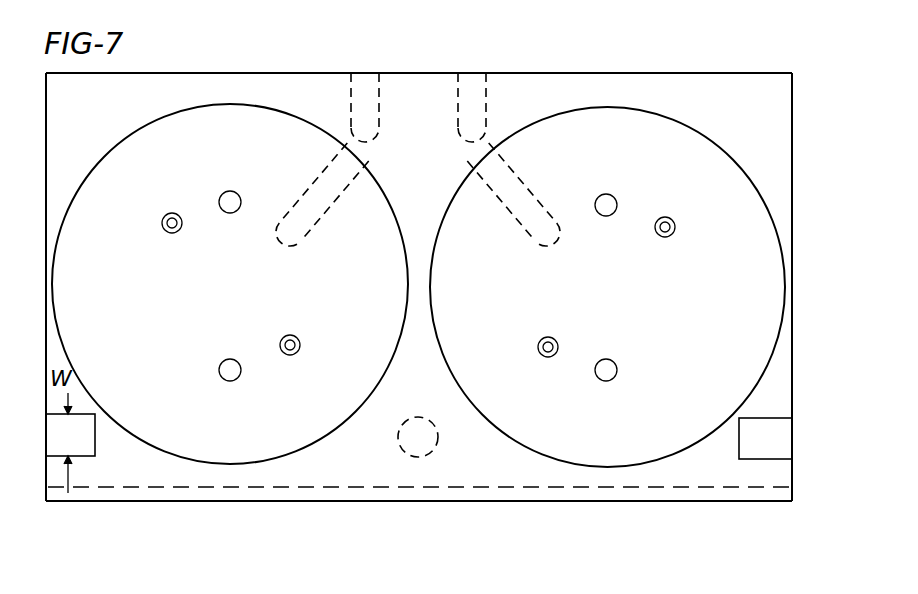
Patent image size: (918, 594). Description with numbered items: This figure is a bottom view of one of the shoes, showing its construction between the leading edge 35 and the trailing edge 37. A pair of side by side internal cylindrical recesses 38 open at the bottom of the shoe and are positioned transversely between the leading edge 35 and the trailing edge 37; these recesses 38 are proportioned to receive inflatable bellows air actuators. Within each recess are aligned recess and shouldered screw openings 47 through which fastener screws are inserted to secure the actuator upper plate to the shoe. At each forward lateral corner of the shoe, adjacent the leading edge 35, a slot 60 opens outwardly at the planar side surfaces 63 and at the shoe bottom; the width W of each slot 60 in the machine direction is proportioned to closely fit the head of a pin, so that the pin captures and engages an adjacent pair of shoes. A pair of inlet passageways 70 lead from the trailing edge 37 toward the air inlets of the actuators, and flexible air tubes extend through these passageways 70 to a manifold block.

The leading edge 35 is at (420, 502).
The trailing edge 37 is at (525, 73).
The internal cylindrical recesses 38 is at (63, 345).
The shouldered screw openings 47 is at (283, 338).
The slot 60 is at (64, 438).
The planar side surfaces 63 is at (46, 410).
The inlet passageways 70 is at (343, 160).